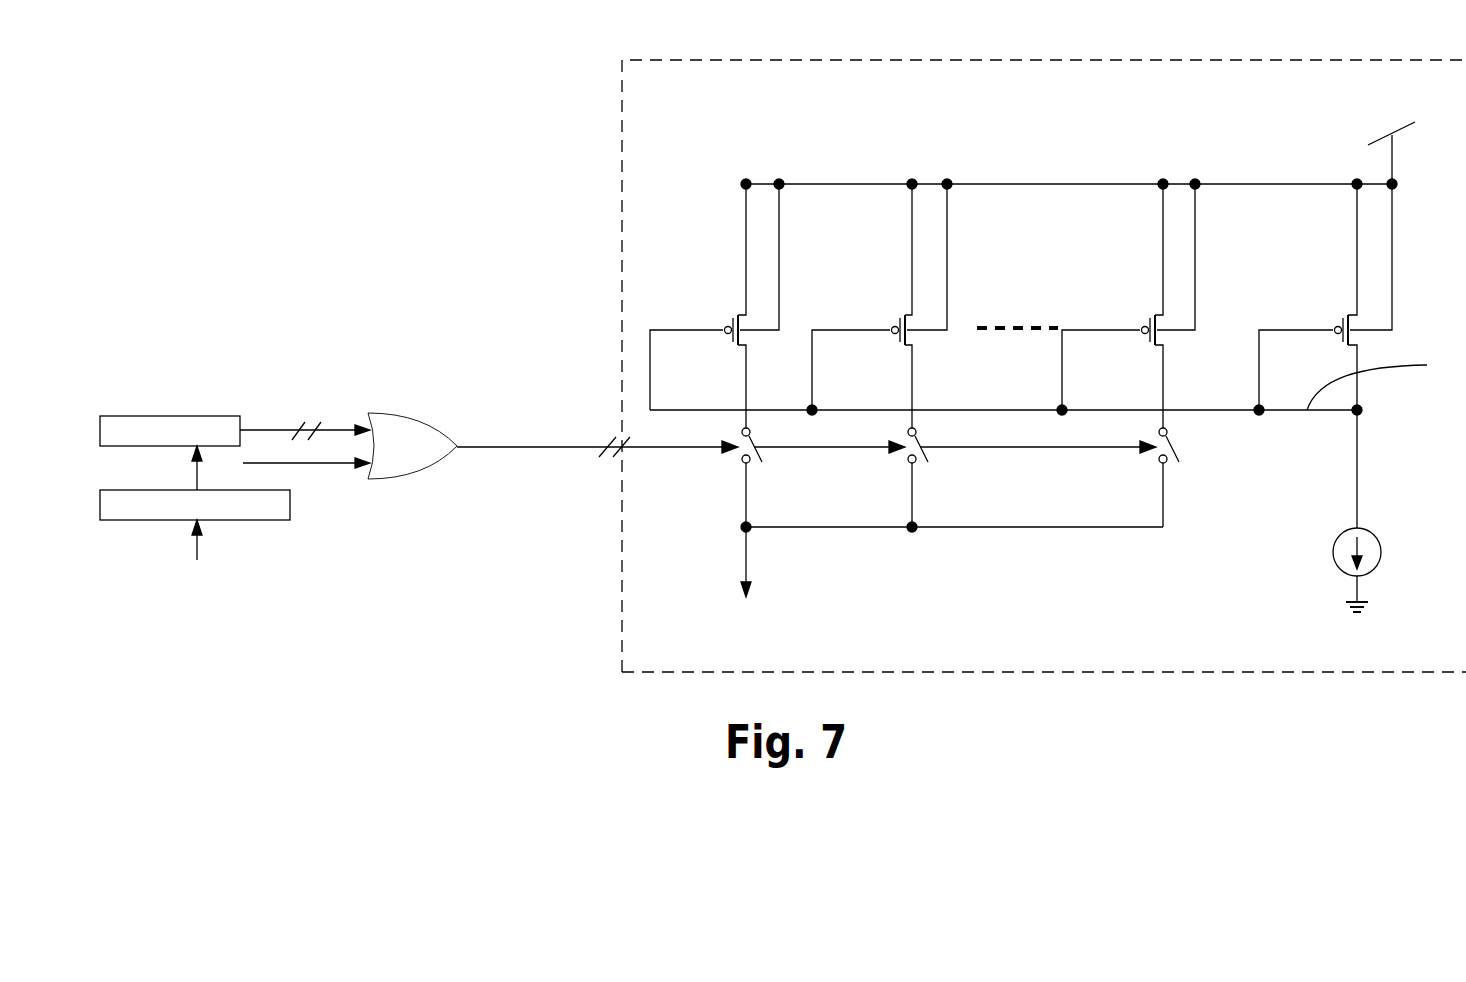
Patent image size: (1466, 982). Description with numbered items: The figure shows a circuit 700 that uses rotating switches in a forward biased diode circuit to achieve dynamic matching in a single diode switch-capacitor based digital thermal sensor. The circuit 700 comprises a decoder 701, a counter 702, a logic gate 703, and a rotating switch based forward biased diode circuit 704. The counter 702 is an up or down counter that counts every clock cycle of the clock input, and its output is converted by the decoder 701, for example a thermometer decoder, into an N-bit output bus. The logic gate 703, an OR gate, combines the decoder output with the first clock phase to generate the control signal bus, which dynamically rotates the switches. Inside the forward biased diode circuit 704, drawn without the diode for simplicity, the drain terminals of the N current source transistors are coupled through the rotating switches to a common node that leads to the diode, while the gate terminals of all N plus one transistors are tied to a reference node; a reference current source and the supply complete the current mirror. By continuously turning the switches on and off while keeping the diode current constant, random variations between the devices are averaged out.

The circuit 700 is at (283, 229).
The decoder 701 is at (118, 416).
The counter 702 is at (117, 520).
The logic gate 703 is at (412, 437).
The rotating switch based forward biased diode circuit 704 is at (668, 91).